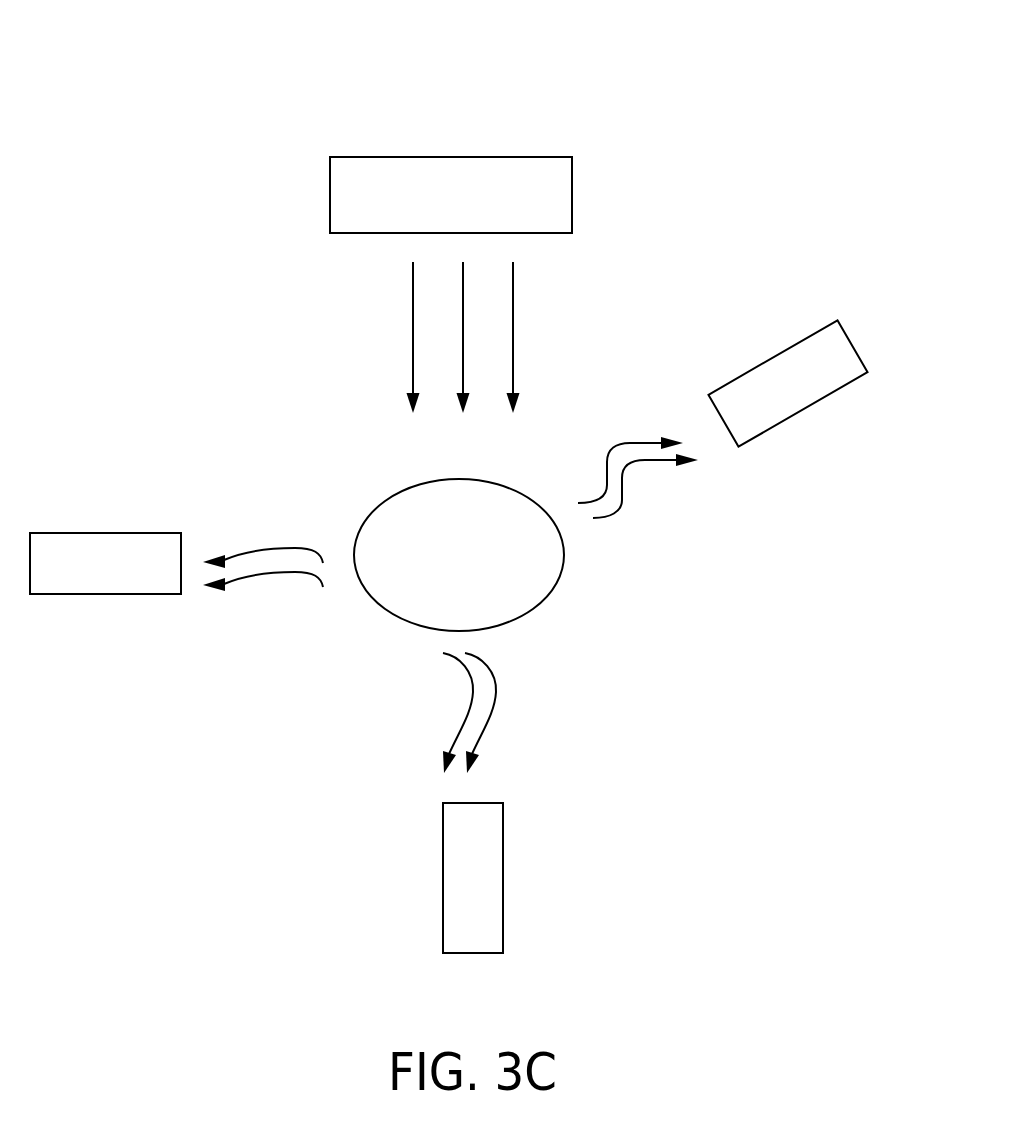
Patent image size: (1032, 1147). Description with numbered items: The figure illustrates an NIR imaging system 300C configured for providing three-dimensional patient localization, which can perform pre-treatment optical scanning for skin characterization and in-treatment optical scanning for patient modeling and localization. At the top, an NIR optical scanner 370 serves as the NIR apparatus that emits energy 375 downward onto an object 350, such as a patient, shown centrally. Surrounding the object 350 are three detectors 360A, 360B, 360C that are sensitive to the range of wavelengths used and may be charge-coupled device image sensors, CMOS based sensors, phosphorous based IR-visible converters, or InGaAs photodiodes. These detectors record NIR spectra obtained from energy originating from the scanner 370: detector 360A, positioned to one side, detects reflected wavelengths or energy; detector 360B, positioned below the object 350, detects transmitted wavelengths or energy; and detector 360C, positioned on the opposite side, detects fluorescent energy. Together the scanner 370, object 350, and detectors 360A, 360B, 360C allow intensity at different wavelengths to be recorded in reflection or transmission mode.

The NIR imaging system 300C is at (800, 50).
The NIR optical scanner 370 is at (330, 188).
The energy 375 is at (398, 338).
The object 350 is at (483, 596).
The detector 360A is at (832, 412).
The detector 360B is at (532, 893).
The detector 360C is at (113, 622).